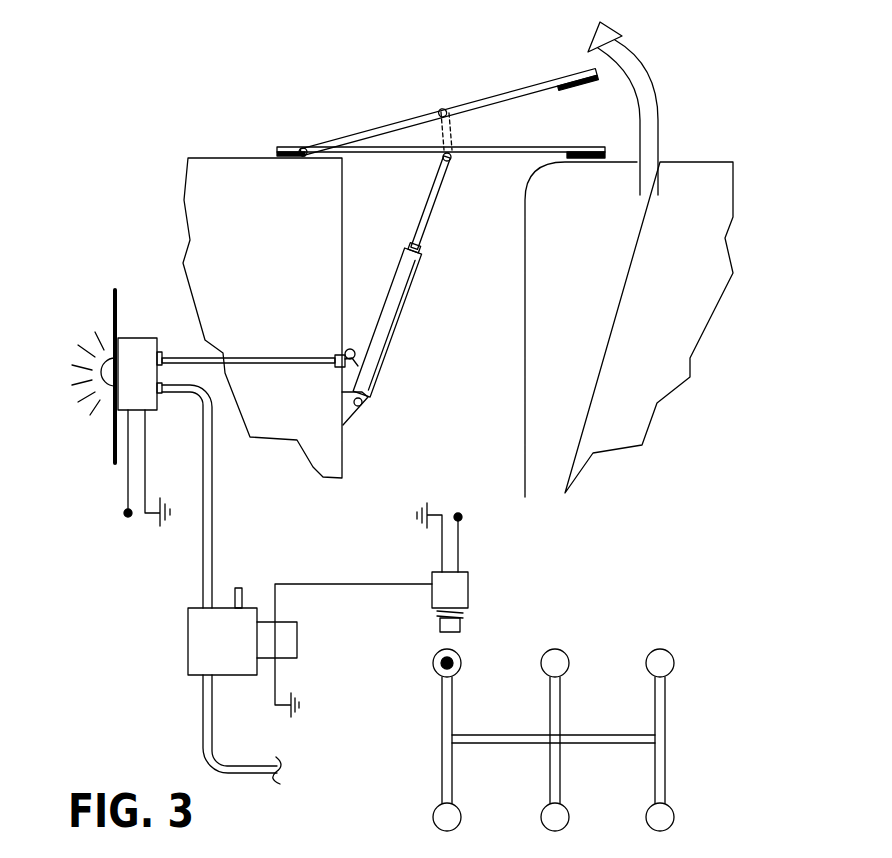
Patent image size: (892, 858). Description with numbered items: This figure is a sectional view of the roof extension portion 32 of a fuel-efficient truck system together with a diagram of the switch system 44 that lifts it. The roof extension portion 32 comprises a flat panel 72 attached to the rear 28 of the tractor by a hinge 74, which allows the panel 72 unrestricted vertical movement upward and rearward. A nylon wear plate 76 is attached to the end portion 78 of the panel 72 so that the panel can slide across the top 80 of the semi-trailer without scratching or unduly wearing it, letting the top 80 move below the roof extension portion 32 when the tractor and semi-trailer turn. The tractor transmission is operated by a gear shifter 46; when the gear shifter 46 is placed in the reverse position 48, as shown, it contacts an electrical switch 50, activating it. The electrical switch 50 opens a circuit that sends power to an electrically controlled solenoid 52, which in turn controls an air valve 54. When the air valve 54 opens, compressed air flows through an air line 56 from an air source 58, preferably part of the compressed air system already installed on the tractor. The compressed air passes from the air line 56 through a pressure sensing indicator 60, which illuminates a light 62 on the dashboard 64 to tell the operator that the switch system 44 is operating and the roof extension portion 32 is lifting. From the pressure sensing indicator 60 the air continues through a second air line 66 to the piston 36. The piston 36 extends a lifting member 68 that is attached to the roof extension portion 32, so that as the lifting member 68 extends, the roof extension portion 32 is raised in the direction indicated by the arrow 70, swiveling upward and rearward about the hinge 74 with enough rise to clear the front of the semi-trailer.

The rear 28 is at (236, 148).
The roof extension portion 32 is at (466, 90).
The piston 36 is at (420, 319).
The switch system 44 is at (262, 644).
The gear shifter 46 is at (585, 725).
The reverse position 48 is at (462, 655).
The electrical switch 50 is at (470, 590).
The electrically controlled solenoid 52 is at (296, 640).
The air valve 54 is at (188, 678).
The air line 56 is at (212, 505).
The air source 58 is at (250, 775).
The pressure sensing indicator 60 is at (127, 395).
The light 62 is at (110, 360).
The dashboard 64 is at (115, 290).
The air line 66 is at (183, 357).
The lifting member 68 is at (430, 226).
The arrow 70 is at (650, 100).
The flat panel 72 is at (443, 105).
The hinge 74 is at (300, 150).
The nylon wear plate 76 is at (573, 90).
The end portion 78 is at (538, 82).
The top 80 is at (626, 160).